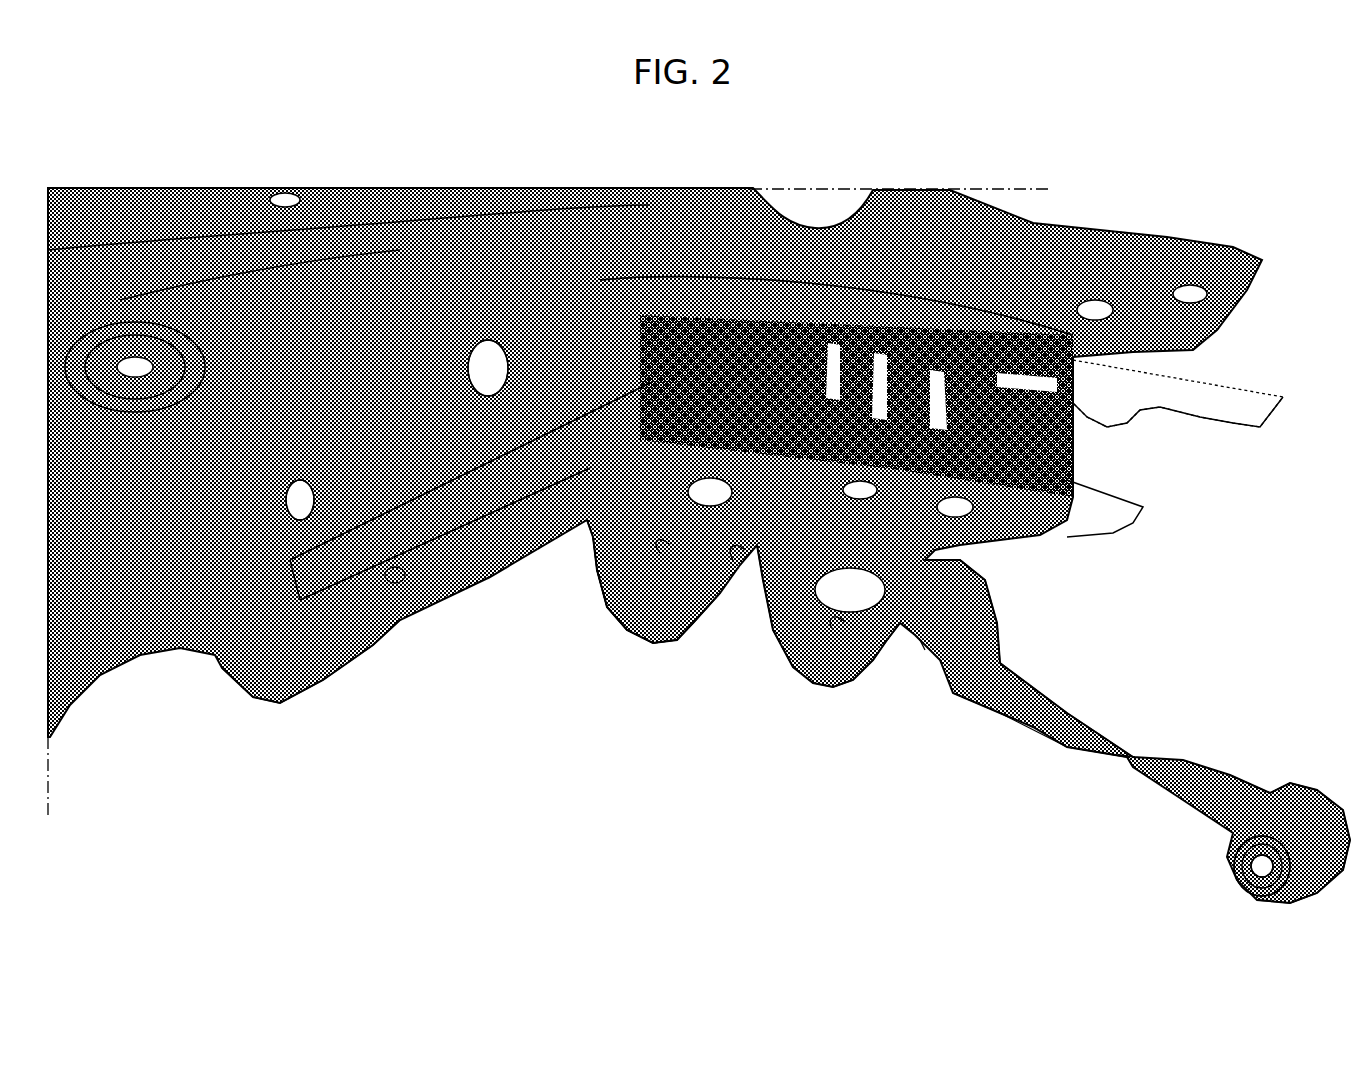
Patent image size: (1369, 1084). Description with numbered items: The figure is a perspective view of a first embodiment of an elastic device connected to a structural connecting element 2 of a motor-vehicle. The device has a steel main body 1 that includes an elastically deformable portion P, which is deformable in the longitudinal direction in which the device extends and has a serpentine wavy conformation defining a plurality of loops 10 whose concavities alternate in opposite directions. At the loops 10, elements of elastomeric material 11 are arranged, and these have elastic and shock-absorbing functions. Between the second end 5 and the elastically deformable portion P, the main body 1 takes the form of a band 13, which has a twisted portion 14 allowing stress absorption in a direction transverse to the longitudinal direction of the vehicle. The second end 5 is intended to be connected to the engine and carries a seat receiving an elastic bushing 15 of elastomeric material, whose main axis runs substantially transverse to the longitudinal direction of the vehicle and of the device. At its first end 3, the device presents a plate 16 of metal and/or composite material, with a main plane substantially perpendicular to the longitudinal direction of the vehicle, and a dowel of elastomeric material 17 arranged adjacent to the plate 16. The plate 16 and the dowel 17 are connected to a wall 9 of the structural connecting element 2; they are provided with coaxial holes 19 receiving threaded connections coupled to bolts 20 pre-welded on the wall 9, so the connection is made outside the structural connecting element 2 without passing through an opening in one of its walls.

The main body 1 is at (640, 660).
The structural connecting element 2 is at (312, 228).
The first end 3 is at (603, 385).
The second end 5 is at (1330, 820).
The wall 9 is at (282, 595).
The loops 10 is at (655, 440).
The elements of elastomeric material 11 is at (520, 457).
The band 13 is at (1040, 717).
The twisted portion 14 is at (1130, 770).
The elastic bushing 15 is at (1270, 897).
The plate 16 is at (380, 605).
The dowel of elastomeric material 17 is at (420, 443).
The coaxial holes 19 is at (400, 570).
The bolts 20 is at (487, 330).
The elastically deformable portion P is at (620, 605).